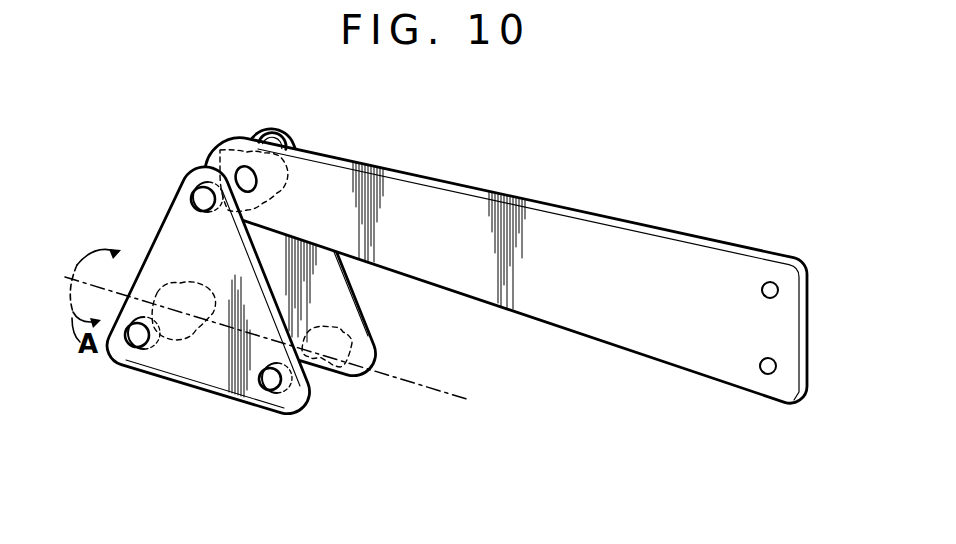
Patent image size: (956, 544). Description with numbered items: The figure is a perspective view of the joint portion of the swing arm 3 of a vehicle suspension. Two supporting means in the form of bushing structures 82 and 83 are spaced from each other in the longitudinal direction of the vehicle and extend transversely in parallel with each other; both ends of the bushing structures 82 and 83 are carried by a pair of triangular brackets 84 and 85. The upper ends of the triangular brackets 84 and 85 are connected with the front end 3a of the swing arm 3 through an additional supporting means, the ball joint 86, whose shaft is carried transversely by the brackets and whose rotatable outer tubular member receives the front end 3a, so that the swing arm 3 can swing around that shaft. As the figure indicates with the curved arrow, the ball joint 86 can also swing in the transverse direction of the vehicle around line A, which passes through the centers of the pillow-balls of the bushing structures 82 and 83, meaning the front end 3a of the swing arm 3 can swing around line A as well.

The swing arm 3 is at (605, 232).
The front end of the swing arm 3a is at (278, 195).
The bushing structure 82 is at (197, 330).
The bushing structure 83 is at (305, 380).
The triangular bracket 84 is at (168, 235).
The triangular bracket 85 is at (281, 131).
The ball joint 86 is at (222, 150).